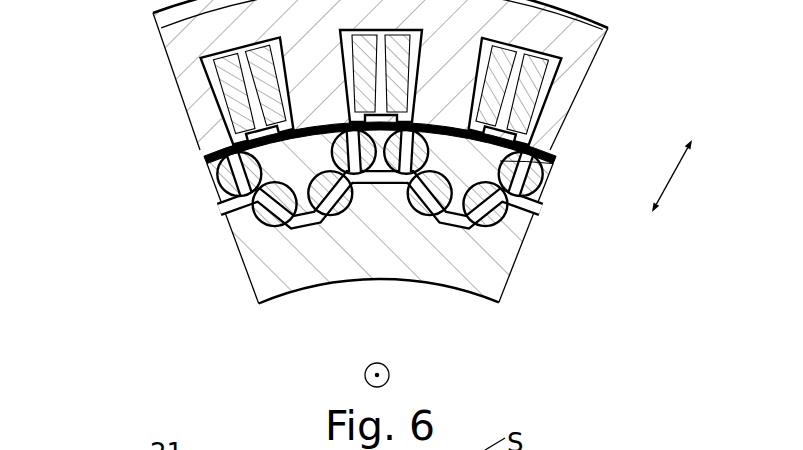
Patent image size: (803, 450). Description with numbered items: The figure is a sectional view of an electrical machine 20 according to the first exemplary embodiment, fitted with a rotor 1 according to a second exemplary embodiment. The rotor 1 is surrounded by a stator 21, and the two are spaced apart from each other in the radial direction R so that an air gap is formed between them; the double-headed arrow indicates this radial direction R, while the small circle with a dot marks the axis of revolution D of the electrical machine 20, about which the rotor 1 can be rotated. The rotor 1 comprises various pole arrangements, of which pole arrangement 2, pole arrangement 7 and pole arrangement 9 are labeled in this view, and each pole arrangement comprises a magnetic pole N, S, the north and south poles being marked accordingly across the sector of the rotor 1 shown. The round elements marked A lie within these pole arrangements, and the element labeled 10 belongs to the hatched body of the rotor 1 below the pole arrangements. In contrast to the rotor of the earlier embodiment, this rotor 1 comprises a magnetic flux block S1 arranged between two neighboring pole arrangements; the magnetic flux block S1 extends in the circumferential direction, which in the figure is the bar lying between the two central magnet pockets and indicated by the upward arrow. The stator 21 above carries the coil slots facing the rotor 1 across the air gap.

The rotor 1 is at (576, 170).
The pole arrangement 2 is at (191, 161).
The pole arrangement 7 is at (434, 237).
The pole arrangement 9 is at (556, 144).
The rotor core 10 is at (492, 258).
The electrical machine 20 is at (122, 104).
The stator 21 is at (188, 55).
The permanent magnet (circular) A is at (380, 195).
The magnetic pole N is at (236, 172).
The magnetic pole S is at (487, 128).
The magnetic flux block S1 is at (378, 199).
The axis of revolution D is at (390, 368).
The radial direction R is at (673, 180).